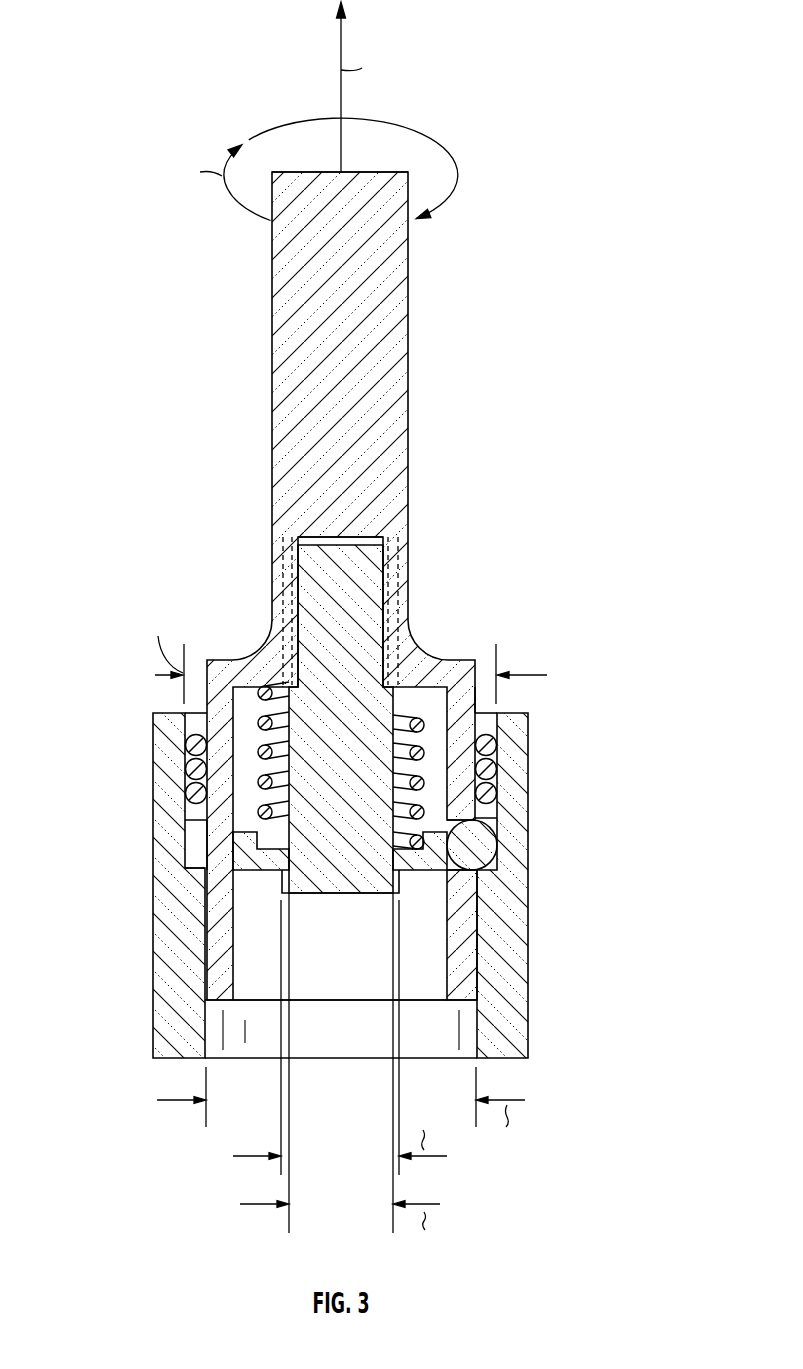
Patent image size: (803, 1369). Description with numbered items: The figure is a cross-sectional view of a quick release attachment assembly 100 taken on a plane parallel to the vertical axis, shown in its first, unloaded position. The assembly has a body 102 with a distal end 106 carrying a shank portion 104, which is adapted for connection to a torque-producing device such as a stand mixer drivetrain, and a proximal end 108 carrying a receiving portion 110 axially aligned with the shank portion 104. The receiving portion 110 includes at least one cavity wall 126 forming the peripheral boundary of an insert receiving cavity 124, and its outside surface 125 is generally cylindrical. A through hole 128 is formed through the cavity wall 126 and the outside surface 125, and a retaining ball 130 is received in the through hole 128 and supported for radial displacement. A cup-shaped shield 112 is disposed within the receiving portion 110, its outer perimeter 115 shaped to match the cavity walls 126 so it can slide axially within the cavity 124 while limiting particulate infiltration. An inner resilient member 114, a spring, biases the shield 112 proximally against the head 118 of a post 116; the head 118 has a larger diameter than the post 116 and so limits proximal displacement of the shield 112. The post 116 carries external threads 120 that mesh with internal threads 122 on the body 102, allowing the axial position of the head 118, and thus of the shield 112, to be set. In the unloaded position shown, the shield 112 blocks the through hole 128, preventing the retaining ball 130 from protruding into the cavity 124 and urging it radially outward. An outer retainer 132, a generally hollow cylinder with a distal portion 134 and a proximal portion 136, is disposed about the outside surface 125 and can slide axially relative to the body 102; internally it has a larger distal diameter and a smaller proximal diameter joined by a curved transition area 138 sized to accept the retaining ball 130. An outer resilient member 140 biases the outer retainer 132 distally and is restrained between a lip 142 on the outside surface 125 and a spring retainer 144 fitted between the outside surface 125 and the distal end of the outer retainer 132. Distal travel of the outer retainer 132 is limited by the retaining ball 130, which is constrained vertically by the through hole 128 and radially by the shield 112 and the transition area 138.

The attachment assembly 100 is at (507, 83).
The body 102 is at (163, 307).
The shank portion 104 is at (408, 330).
The distal end 106 is at (410, 185).
The proximal end 108 is at (478, 980).
The receiving portion 110 is at (478, 929).
The shield 112 is at (250, 870).
The inner resilient member 114 is at (267, 722).
The outer perimeter 115 is at (200, 848).
The post 116 is at (355, 643).
The head 118 is at (307, 888).
The external threads 120 is at (378, 582).
The internal threads 122 is at (397, 542).
The insert receiving cavity 124 is at (327, 961).
The outside surface 125 is at (475, 700).
The cavity wall 126 is at (212, 953).
The through hole 128 is at (447, 872).
The retaining ball 130 is at (482, 847).
The outer retainer 132 is at (529, 836).
The distal portion 134 is at (566, 736).
The proximal portion 136 is at (578, 1041).
The transition area 138 is at (190, 850).
The outer resilient member 140 is at (186, 767).
The lip 142 is at (495, 816).
The spring retainer 144 is at (193, 714).